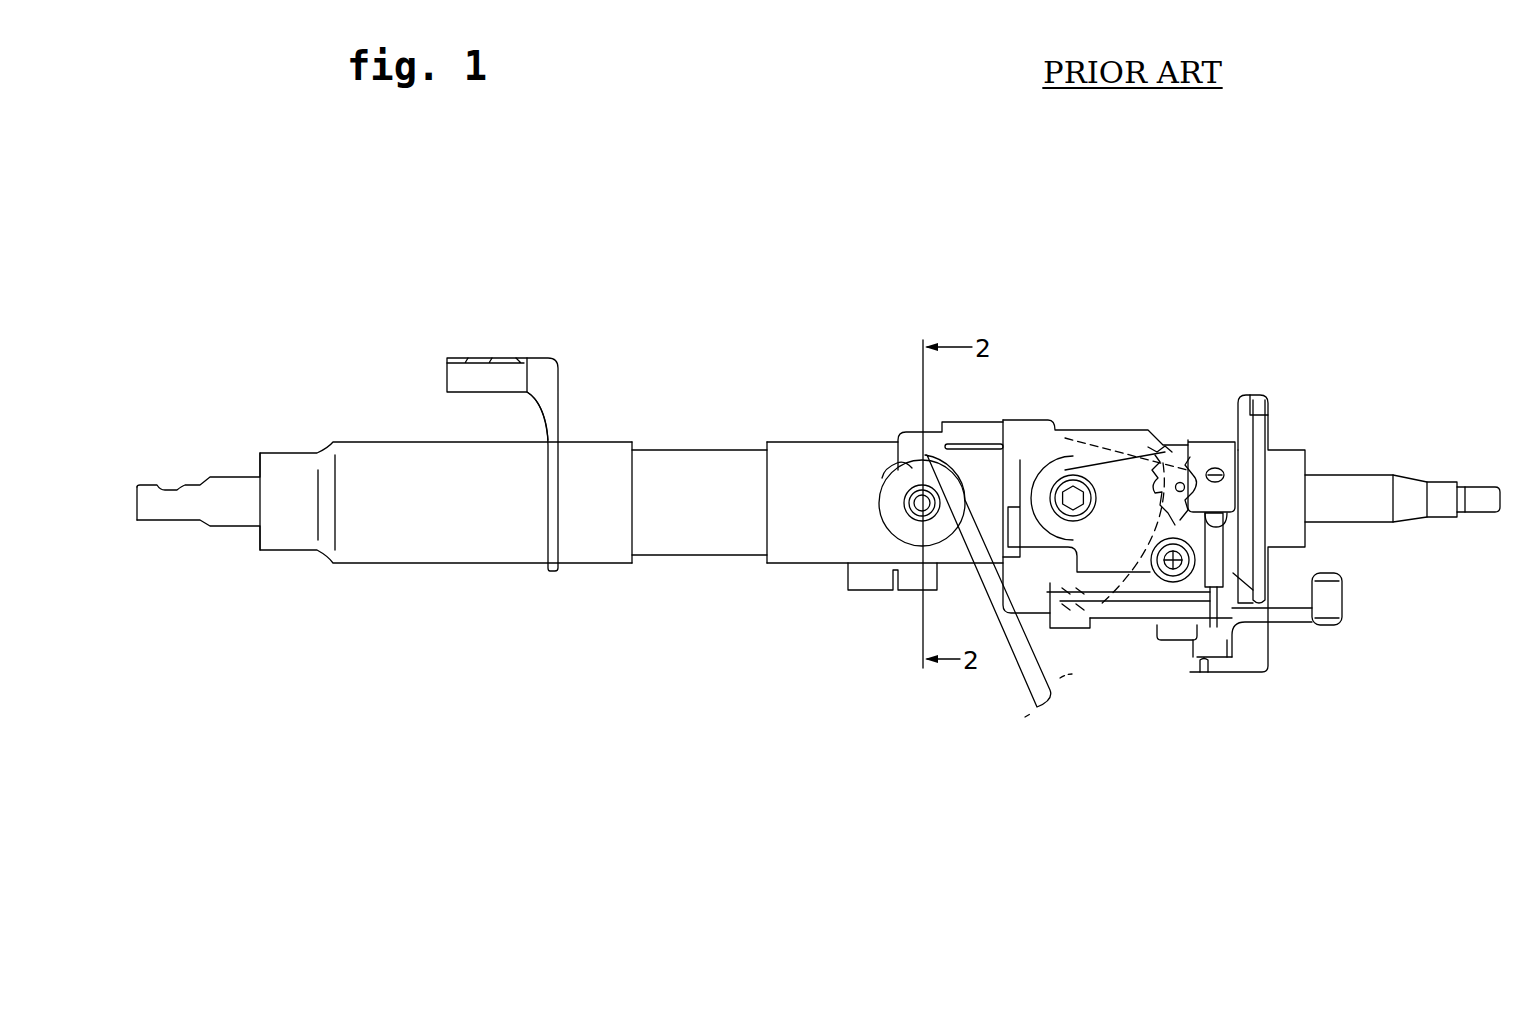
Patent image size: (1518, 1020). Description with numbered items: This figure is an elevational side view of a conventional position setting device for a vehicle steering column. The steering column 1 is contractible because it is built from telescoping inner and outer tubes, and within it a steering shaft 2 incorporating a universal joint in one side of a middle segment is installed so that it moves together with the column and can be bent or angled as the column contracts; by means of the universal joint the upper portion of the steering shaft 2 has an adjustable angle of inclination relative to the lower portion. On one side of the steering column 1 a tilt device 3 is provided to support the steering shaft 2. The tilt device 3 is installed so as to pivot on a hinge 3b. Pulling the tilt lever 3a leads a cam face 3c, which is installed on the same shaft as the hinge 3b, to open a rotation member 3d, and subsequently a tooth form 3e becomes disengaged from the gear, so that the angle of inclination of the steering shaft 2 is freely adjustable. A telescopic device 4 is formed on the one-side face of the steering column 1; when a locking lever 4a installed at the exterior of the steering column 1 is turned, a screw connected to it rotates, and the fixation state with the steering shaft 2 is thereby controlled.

The steering column 1 is at (718, 418).
The steering shaft 2 is at (1338, 487).
The tilt device 3 is at (1177, 690).
The tilt lever 3a is at (1342, 605).
The hinge 3b is at (1073, 490).
The cam face 3c is at (1185, 465).
The rotation member 3d is at (1213, 466).
The tooth form 3e is at (1166, 446).
The telescopic device 4 is at (909, 605).
The locking lever 4a is at (1023, 655).